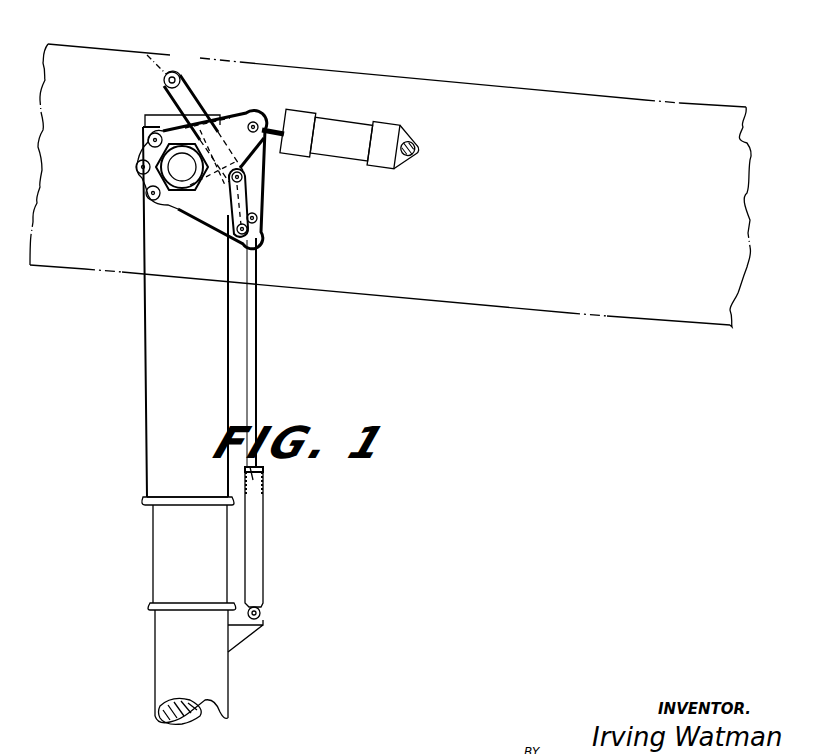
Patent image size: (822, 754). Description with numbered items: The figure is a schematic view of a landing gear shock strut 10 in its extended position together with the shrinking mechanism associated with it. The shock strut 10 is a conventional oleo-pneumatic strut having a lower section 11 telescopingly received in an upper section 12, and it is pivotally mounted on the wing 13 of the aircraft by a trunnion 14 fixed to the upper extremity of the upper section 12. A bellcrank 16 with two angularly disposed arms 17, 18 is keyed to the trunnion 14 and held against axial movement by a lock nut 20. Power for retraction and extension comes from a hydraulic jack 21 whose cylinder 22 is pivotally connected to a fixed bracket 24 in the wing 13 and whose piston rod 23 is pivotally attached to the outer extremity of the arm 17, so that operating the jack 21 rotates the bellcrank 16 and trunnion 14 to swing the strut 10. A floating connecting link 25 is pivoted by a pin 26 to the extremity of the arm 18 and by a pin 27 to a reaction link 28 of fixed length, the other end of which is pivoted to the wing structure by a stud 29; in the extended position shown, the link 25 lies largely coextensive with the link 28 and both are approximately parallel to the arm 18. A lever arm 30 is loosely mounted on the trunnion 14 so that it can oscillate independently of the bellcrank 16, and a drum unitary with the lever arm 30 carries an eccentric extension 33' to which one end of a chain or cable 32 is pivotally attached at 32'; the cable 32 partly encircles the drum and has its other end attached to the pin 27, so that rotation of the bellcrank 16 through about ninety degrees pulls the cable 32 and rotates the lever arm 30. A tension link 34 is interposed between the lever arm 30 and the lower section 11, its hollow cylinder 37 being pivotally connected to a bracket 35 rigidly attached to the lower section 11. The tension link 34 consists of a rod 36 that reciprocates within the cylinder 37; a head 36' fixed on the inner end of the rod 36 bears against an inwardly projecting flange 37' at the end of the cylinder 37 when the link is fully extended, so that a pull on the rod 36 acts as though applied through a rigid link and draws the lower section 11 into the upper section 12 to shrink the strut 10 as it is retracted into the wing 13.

The shock strut 10 is at (146, 461).
The lower section 11 is at (172, 657).
The upper section 12 is at (160, 350).
The wing 13 is at (596, 120).
The trunnion 14 is at (175, 170).
The bellcrank 16 is at (152, 154).
The arm 17 is at (234, 124).
The arm 18 is at (214, 230).
The lock nut 20 is at (136, 168).
The hydraulic jack 21 is at (337, 113).
The cylinder 22 is at (372, 118).
The piston rod 23 is at (272, 129).
The fixed bracket 24 is at (417, 130).
The connecting link 25 is at (248, 195).
The pin 26 is at (248, 231).
The pin 27 is at (243, 177).
The reaction link 28 is at (192, 110).
The stud 29 is at (174, 72).
The lever arm 30 is at (258, 206).
The chain or cable 32 is at (136, 204).
The pivotal attachment 32' is at (131, 134).
The eccentric extension 33' is at (174, 109).
The tension link 34 is at (262, 490).
The bracket 35 is at (240, 645).
The rod 36 is at (268, 352).
The head 36' is at (270, 457).
The hollow cylinder 37 is at (270, 545).
The flange 37' is at (274, 462).